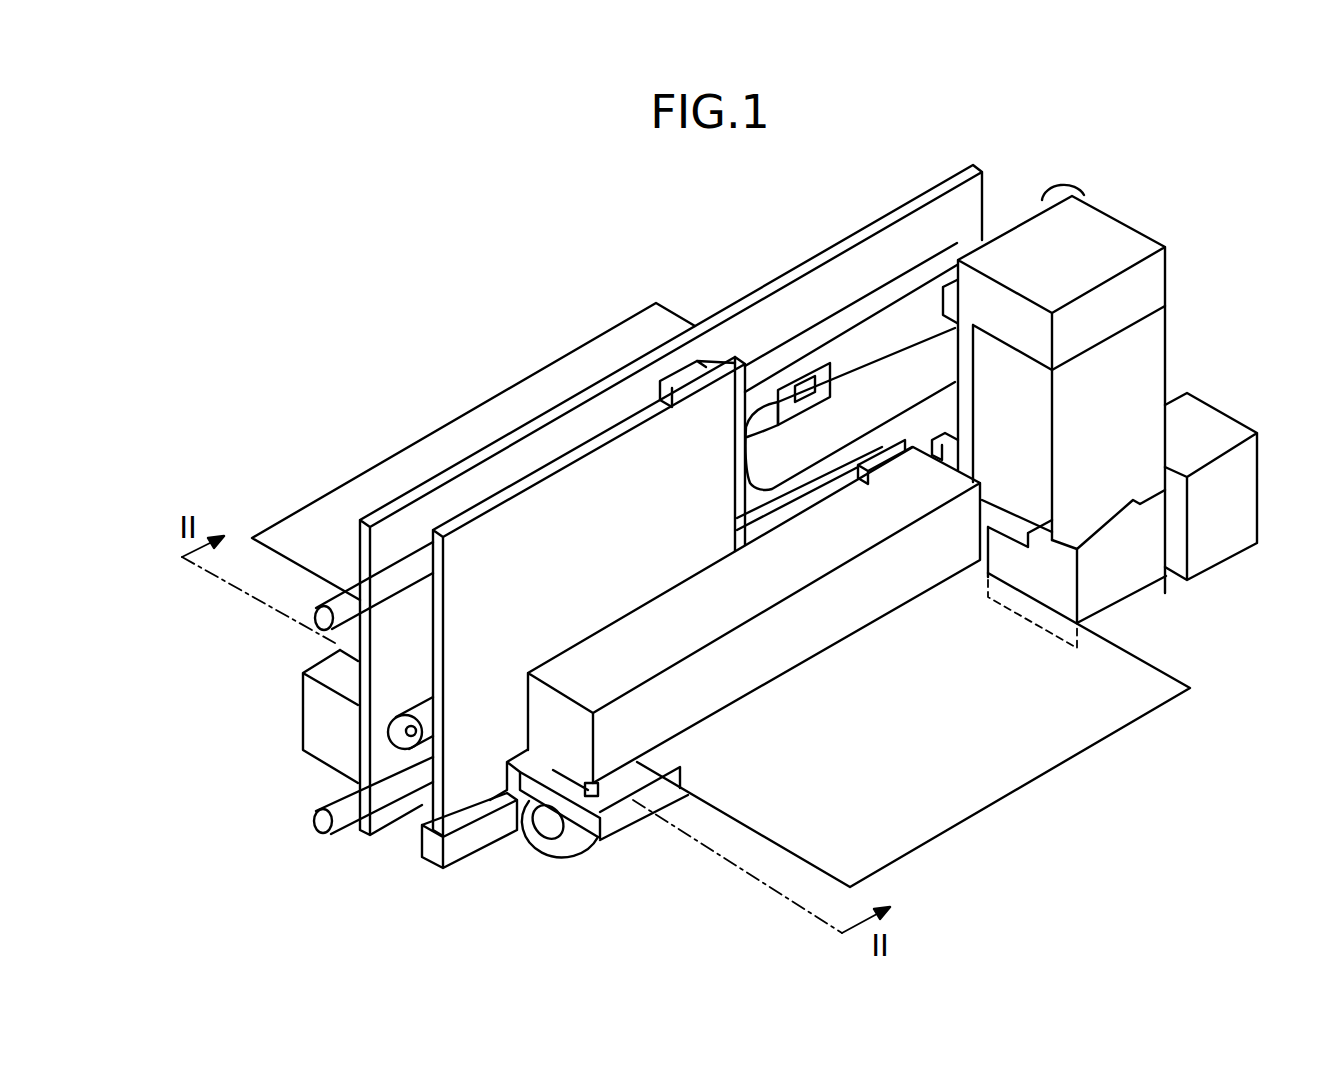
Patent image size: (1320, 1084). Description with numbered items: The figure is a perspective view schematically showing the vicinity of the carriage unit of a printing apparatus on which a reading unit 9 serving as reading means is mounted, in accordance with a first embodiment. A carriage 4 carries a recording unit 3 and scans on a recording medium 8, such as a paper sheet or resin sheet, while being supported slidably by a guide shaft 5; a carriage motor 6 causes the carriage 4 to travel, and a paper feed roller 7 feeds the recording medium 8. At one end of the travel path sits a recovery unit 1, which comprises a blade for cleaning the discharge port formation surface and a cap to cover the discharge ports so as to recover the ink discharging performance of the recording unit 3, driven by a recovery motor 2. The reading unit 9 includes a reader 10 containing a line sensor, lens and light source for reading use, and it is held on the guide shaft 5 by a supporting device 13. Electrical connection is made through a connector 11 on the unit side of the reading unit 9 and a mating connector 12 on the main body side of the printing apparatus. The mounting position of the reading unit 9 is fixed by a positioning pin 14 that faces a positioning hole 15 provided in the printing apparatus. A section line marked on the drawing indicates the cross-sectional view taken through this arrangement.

The recovery unit 1 is at (1135, 598).
The recovery motor 2 is at (1245, 497).
The recording unit 3 is at (1155, 350).
The carriage 4 is at (1110, 232).
The guide shaft 5 is at (835, 332).
The carriage motor 6 is at (325, 724).
The paper feed roller 7 is at (590, 843).
The recording medium 8 is at (1005, 780).
The reading unit 9 is at (560, 457).
The reader 10 is at (620, 635).
The connector on the unit side 11 is at (455, 778).
The connector on the main body side 12 is at (460, 850).
The supporting device 13 is at (700, 368).
The positioning pin 14 is at (567, 790).
The positioning hole 15 is at (582, 780).